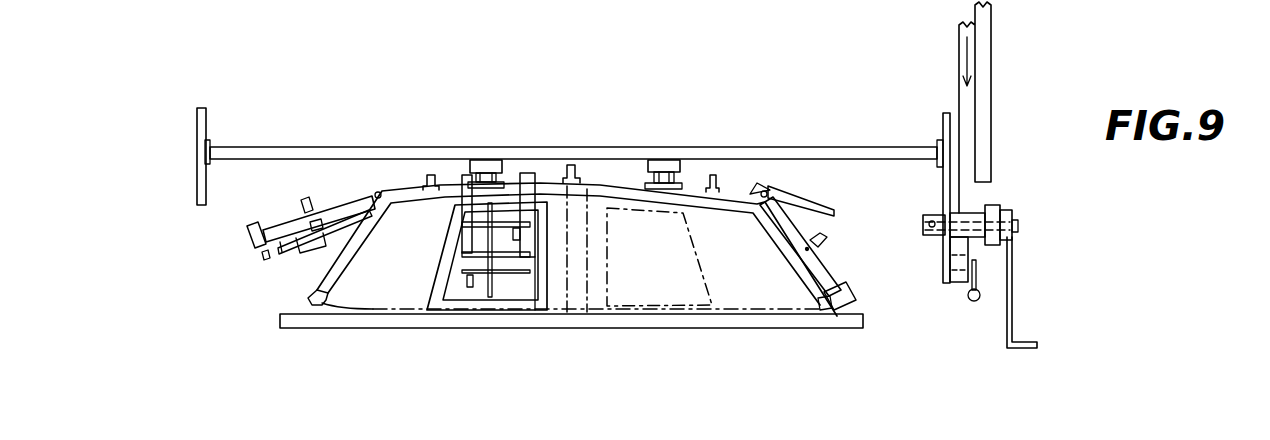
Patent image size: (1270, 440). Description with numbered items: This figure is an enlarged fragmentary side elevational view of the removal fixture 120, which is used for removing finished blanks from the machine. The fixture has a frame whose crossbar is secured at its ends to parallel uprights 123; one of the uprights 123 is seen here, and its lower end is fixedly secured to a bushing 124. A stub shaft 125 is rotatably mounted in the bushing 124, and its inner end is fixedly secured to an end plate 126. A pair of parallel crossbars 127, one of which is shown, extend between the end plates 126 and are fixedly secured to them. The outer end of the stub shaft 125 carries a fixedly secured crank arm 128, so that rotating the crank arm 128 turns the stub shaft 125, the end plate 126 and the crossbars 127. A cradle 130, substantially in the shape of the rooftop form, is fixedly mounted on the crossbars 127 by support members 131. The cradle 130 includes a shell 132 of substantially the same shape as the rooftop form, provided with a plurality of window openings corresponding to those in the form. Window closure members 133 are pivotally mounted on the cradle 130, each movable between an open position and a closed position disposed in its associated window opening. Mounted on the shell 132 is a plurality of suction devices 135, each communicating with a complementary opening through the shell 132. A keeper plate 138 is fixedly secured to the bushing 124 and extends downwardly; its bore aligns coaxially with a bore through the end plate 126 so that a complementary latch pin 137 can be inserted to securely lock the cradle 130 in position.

The removal fixture 120 is at (731, 81).
The uprights 123 is at (958, 50).
The bushings 124 is at (972, 218).
The stub shafts 125 is at (930, 215).
The end plates 126 is at (943, 122).
The crossbars 127 is at (812, 147).
The crank arm 128 is at (1013, 322).
The cradle 130 is at (343, 356).
The support members 131 is at (487, 163).
The shell 132 is at (397, 292).
The window closure members 133 is at (289, 226).
The suction devices 135 is at (421, 188).
The latch pins 137 is at (970, 284).
The keeper plate 138 is at (955, 246).